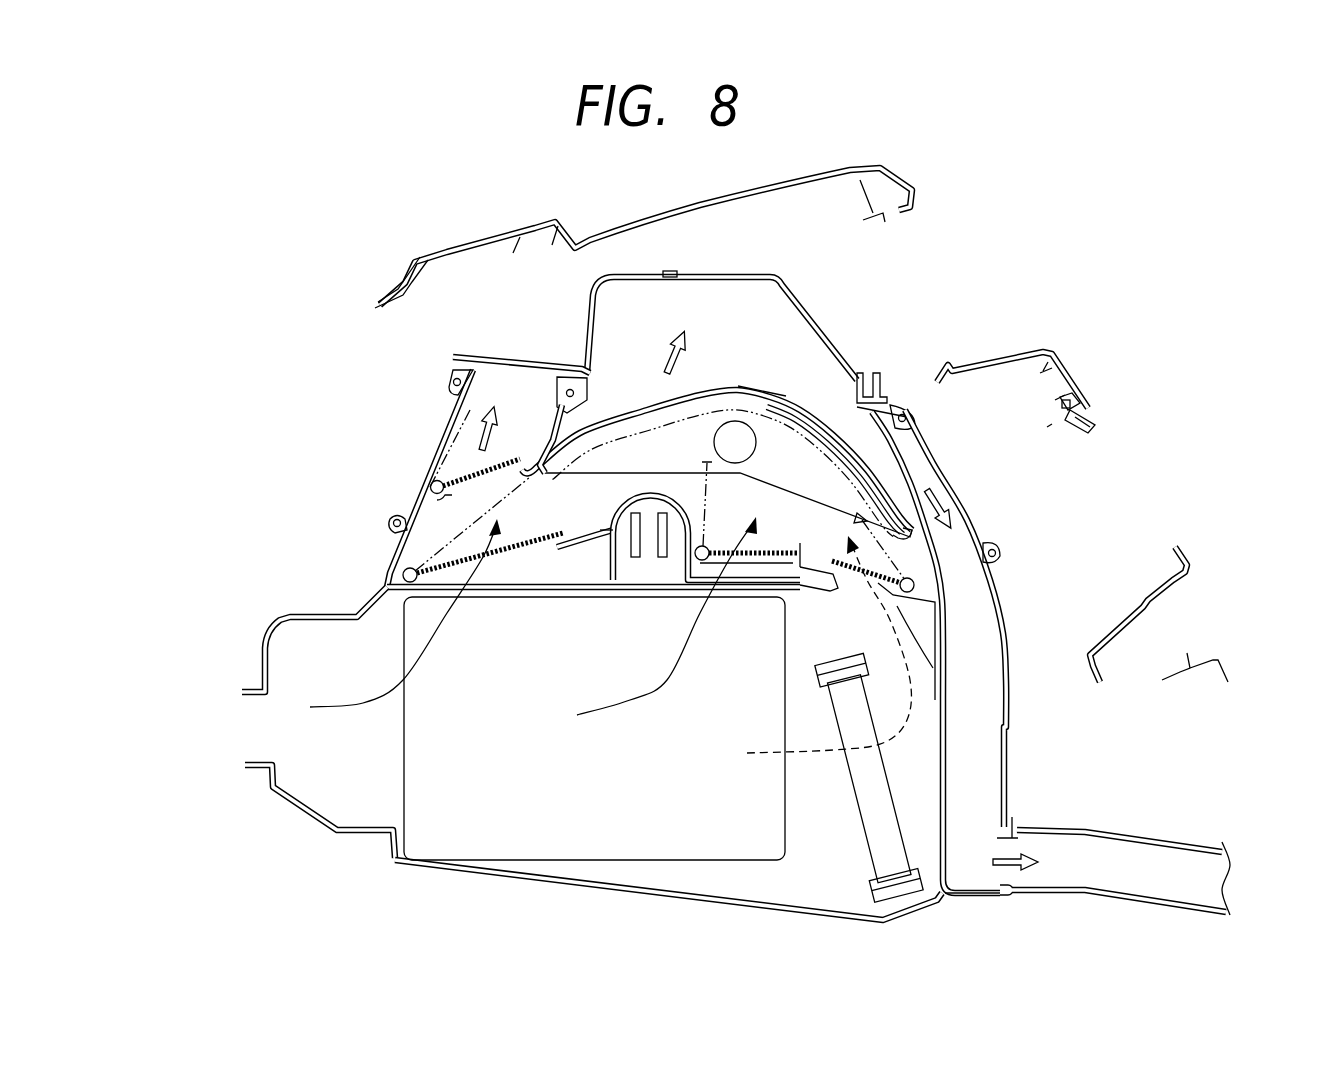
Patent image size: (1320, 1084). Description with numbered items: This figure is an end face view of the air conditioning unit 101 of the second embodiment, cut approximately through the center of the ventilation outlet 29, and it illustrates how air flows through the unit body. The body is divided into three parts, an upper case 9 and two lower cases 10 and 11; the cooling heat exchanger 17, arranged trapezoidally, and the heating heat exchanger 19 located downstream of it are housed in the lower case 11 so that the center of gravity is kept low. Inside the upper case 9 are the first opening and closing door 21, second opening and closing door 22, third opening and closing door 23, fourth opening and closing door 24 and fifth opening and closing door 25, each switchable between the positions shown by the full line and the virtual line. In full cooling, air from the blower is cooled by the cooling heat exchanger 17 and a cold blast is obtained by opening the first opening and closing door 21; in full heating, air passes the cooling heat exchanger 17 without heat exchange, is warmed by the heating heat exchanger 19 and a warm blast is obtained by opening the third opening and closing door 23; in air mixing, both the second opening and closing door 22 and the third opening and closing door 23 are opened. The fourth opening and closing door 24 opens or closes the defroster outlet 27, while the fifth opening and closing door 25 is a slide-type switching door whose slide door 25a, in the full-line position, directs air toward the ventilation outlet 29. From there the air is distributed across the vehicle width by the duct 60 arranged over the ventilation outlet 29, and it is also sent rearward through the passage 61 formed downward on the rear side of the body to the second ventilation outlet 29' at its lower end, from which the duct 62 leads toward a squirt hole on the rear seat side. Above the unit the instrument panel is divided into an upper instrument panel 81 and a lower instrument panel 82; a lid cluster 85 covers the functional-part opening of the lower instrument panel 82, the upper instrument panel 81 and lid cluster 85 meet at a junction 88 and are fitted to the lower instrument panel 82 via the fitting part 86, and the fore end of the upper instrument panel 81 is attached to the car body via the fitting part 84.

The air conditioning unit 101 is at (355, 343).
The fitting part 84 is at (373, 307).
The upper instrument panel 81 is at (913, 170).
The duct 60 is at (783, 287).
The fifth opening and closing door 25 is at (798, 385).
The ventilation outlet 29 is at (767, 601).
The defroster outlet 27 is at (523, 373).
The upper case 9 is at (430, 460).
The fourth opening and closing door 24 is at (497, 460).
The slide door 25a is at (607, 430).
The second opening and closing door 22 is at (760, 553).
The third opening and closing door 23 is at (830, 560).
The first opening and closing door 21 is at (540, 540).
The lower case 10 is at (310, 613).
The junction 88 is at (1036, 409).
The lid cluster 85 is at (1103, 407).
The fitting part 86 is at (1043, 430).
The lower instrument panel 82 is at (1100, 427).
The passage 61 is at (983, 597).
The duct 62 is at (1150, 850).
The lower case 11 is at (300, 810).
The cooling heat exchanger 17 is at (443, 847).
The heating heat exchanger 19 is at (880, 855).
The second ventilation outlet 29' is at (972, 914).